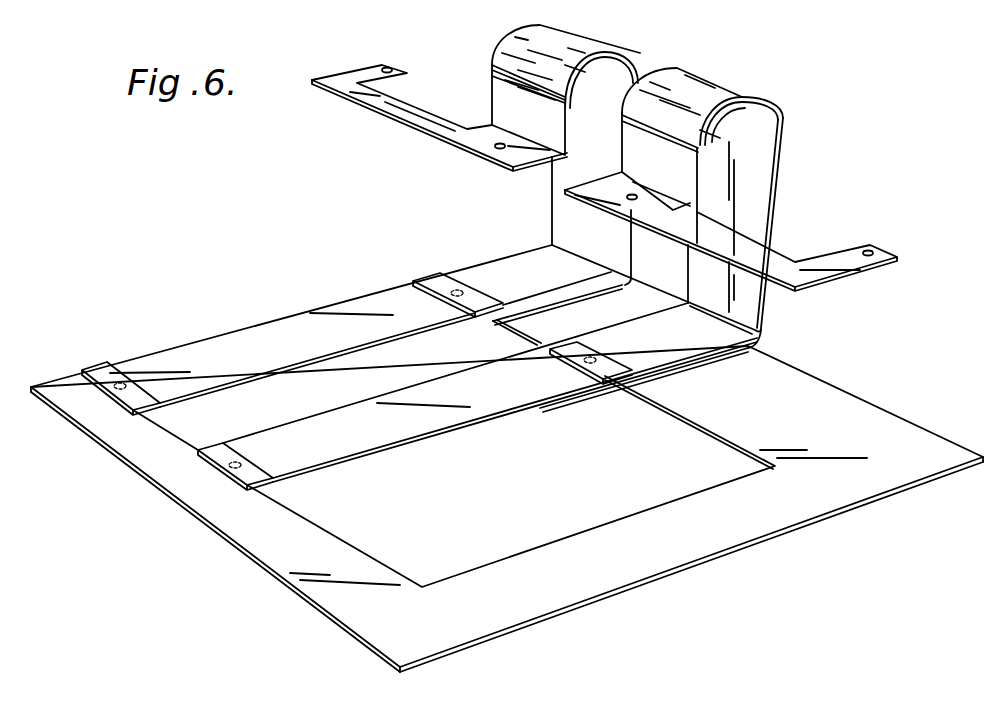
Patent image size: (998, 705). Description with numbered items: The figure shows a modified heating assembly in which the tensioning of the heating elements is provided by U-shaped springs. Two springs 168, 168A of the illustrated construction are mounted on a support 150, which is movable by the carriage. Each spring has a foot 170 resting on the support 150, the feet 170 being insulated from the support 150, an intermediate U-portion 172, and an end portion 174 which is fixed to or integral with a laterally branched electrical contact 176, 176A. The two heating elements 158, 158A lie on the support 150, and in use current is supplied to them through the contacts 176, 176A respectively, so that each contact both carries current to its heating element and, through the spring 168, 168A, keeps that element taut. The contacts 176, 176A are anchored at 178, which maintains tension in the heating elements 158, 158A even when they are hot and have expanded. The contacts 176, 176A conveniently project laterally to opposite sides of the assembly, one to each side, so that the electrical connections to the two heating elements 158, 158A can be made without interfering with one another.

The support 150 is at (592, 540).
The heating element 158 is at (300, 331).
The heating element 158A is at (440, 394).
The spring 168 is at (634, 50).
The spring 168A is at (787, 117).
The foot 170 is at (713, 343).
The intermediate U-portion 172 is at (728, 108).
The end portion 174 is at (587, 177).
The laterally branched electrical contact 176 is at (437, 128).
The laterally branched electrical contact 176A is at (755, 253).
The anchorage 178 is at (392, 65).